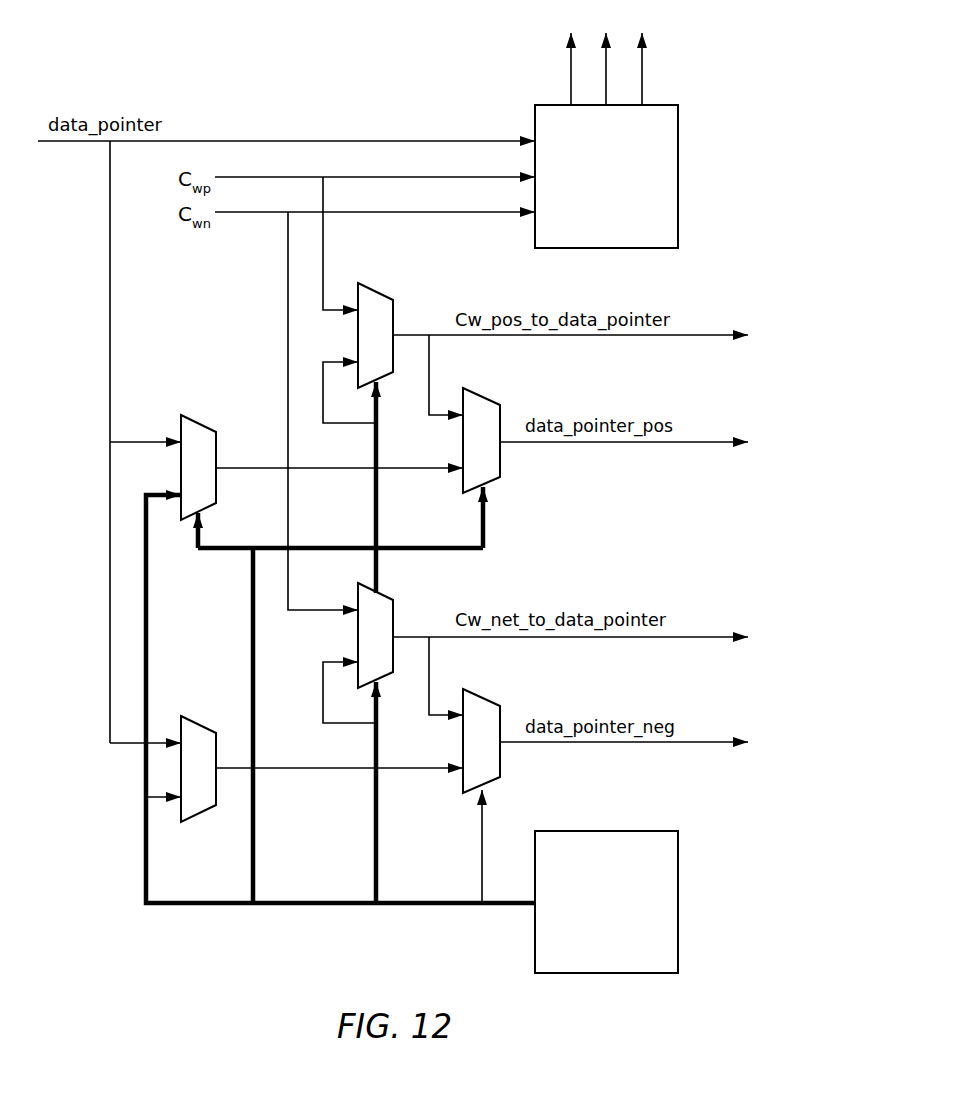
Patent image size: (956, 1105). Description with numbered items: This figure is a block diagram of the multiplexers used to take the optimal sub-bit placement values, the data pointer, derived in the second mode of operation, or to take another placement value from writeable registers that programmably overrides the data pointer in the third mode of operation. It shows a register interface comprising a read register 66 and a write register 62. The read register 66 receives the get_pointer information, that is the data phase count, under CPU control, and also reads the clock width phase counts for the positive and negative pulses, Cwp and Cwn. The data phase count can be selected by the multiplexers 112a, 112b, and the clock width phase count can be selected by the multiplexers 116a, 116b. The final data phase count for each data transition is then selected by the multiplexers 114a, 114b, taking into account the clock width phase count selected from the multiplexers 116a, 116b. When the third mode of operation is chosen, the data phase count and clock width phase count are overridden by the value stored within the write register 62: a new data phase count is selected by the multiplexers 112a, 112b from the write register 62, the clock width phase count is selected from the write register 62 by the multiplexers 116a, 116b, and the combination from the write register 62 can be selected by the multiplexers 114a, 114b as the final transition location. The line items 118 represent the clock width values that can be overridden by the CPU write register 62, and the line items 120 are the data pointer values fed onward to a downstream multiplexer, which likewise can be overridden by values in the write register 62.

The read register 66 is at (594, 208).
The write register 62 is at (594, 948).
The multiplexer 112a is at (202, 418).
The multiplexer 112b is at (217, 785).
The multiplexer 114a is at (484, 393).
The multiplexer 114b is at (485, 696).
The multiplexer 116a is at (377, 287).
The multiplexer 116b is at (377, 587).
The line items 118 is at (597, 588).
The line items 120 is at (700, 460).